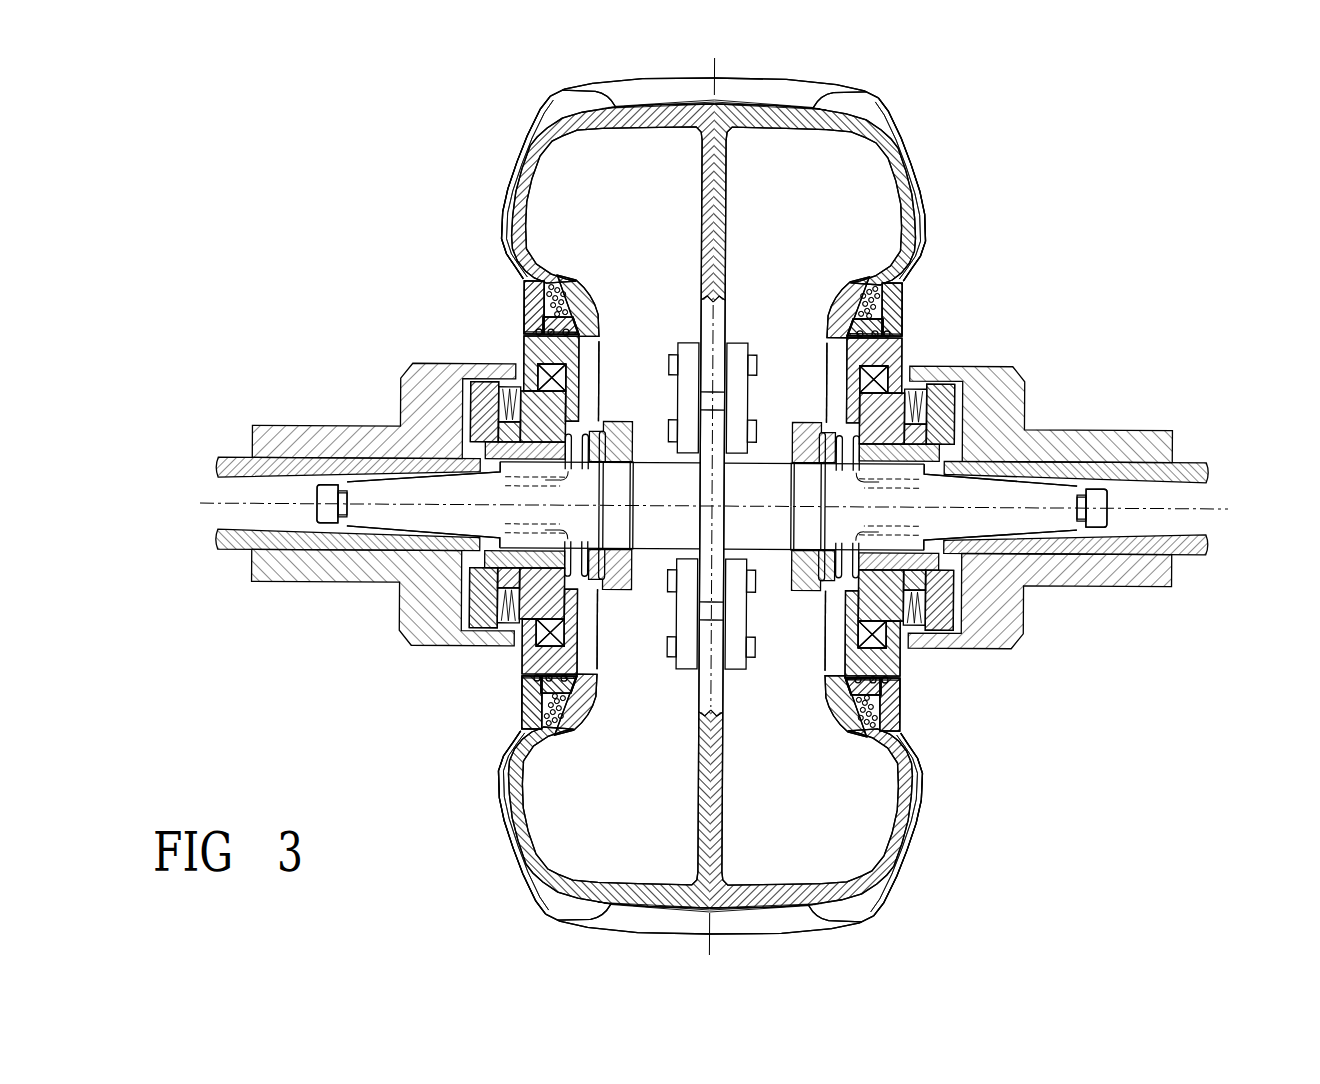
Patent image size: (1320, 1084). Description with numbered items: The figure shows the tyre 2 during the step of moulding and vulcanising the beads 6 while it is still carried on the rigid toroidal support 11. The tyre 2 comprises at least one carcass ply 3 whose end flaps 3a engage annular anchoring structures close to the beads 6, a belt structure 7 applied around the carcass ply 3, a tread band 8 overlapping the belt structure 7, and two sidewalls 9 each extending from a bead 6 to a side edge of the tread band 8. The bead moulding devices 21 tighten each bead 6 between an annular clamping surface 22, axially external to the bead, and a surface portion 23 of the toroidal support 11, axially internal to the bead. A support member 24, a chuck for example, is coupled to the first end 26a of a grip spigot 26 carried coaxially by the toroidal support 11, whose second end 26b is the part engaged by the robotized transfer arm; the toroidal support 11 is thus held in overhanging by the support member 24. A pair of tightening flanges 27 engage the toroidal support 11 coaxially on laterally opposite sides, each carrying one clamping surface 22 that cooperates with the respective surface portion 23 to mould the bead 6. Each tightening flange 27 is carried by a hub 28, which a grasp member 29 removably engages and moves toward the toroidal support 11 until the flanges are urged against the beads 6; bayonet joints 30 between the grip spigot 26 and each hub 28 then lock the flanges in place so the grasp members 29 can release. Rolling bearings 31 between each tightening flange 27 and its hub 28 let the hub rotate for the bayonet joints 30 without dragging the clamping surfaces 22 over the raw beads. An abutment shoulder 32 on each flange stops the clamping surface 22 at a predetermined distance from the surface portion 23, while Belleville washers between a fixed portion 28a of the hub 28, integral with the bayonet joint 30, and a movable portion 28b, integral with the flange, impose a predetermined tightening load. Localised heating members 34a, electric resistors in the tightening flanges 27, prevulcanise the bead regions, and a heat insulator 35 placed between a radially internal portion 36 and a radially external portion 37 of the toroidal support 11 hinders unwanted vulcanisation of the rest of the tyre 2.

The tyre 2 is at (909, 120).
The carcass ply 3 is at (917, 183).
The end flaps 3a is at (913, 273).
The beads 6 is at (880, 310).
The belt structure 7 is at (543, 103).
The tread band 8 is at (857, 103).
The sidewalls 9 is at (503, 207).
The toroidal support 11 is at (523, 170).
The bead moulding devices 21 is at (932, 308).
The annular clamping surface 22 is at (520, 733).
The surface portion 23 is at (577, 717).
The support member 24 is at (1187, 547).
The grip spigot 26 is at (760, 530).
The first end 26a is at (1027, 500).
The second end 26b is at (380, 512).
The tightening flanges 27 is at (902, 318).
The hub 28 is at (923, 457).
The fixed portion 28a is at (927, 560).
The movable portion 28b is at (950, 560).
The grasp member 29 is at (413, 403).
The bayonet joints 30 is at (507, 557).
The rolling bearings 31 is at (523, 357).
The abutment shoulder 32 is at (573, 327).
The localised heating members 34a is at (523, 317).
The heat insulator 35 is at (563, 273).
The radially internal portion 36 is at (577, 303).
The radially external portion 37 is at (523, 198).